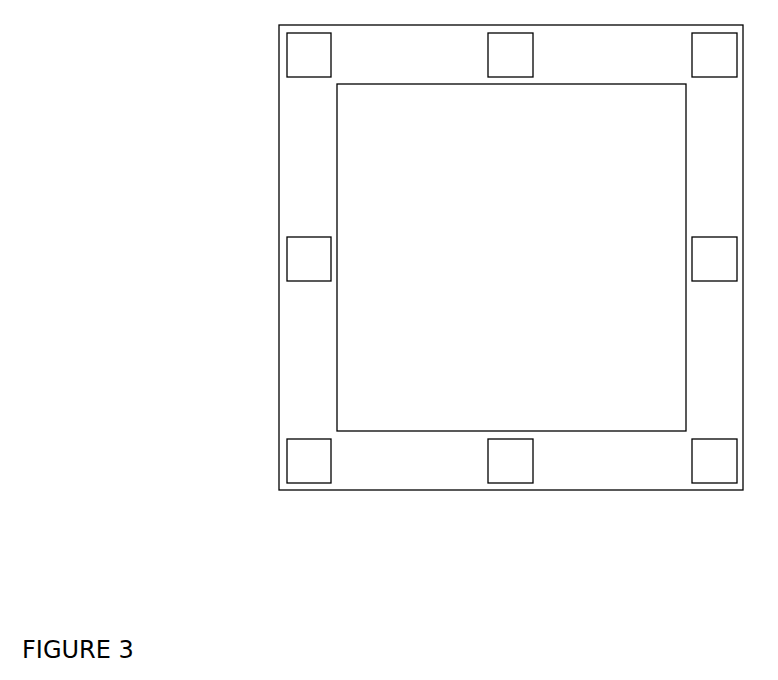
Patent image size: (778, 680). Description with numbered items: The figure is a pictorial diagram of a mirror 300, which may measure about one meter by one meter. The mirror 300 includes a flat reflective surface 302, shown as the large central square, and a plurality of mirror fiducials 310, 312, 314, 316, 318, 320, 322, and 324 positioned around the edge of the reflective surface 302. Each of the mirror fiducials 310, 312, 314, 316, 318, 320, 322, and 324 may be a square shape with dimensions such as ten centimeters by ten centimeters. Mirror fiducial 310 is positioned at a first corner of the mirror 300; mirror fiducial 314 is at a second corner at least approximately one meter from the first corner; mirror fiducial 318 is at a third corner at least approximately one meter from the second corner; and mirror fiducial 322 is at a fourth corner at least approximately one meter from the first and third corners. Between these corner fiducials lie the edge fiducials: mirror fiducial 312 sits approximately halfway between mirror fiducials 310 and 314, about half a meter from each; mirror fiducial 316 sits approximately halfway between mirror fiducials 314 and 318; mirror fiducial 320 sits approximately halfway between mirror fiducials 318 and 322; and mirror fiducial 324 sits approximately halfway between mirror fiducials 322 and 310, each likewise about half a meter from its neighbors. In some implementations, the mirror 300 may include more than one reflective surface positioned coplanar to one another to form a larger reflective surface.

The mirror 300 is at (62, 628).
The flat reflective surface 302 is at (497, 272).
The mirror fiducial 310 is at (309, 55).
The mirror fiducial 312 is at (510, 55).
The mirror fiducial 314 is at (714, 55).
The mirror fiducial 316 is at (714, 259).
The mirror fiducial 318 is at (714, 461).
The mirror fiducial 320 is at (510, 461).
The mirror fiducial 322 is at (309, 461).
The mirror fiducial 324 is at (309, 259).